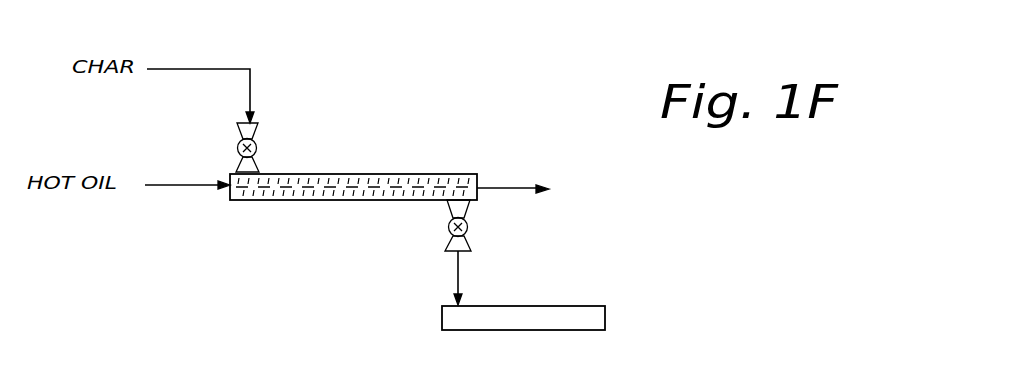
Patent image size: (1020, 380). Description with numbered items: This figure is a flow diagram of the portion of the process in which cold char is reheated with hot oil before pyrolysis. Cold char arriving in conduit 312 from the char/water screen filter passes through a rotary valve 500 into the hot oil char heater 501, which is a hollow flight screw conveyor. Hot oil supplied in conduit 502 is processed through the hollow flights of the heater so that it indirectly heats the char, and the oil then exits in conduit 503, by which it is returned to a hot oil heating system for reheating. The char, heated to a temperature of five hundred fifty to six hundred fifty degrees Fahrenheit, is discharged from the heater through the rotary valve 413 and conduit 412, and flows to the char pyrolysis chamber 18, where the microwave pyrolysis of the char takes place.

The conduit 312 is at (200, 69).
The rotary valve 500 is at (238, 148).
The hot oil char heater 501 is at (352, 174).
The conduit 502 is at (185, 186).
The conduit 503 is at (510, 188).
The rotary valve 413 is at (449, 226).
The conduit 412 is at (458, 268).
The char pyrolysis chamber 18 is at (530, 306).